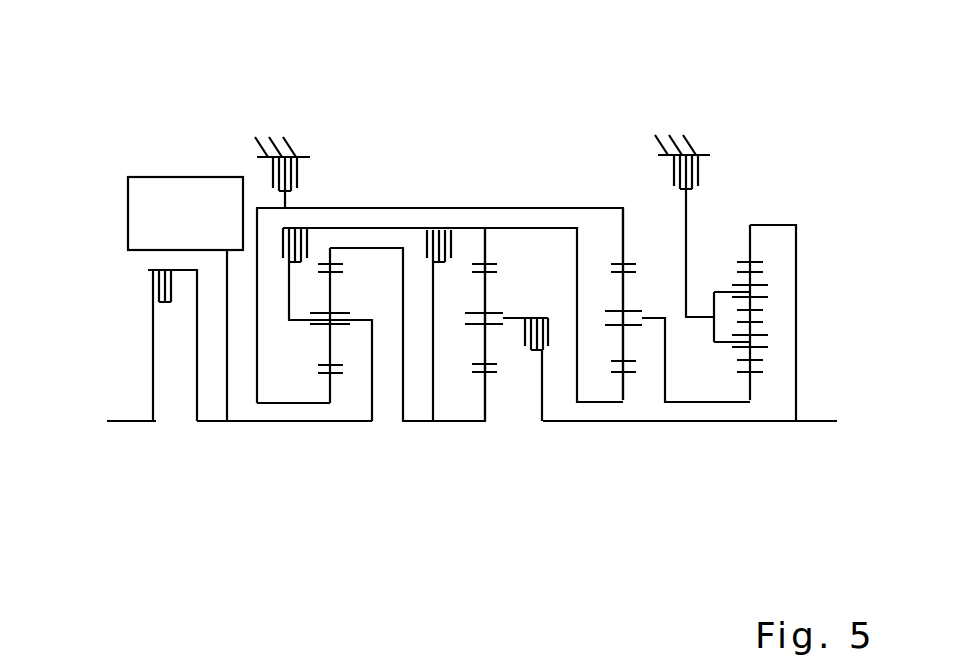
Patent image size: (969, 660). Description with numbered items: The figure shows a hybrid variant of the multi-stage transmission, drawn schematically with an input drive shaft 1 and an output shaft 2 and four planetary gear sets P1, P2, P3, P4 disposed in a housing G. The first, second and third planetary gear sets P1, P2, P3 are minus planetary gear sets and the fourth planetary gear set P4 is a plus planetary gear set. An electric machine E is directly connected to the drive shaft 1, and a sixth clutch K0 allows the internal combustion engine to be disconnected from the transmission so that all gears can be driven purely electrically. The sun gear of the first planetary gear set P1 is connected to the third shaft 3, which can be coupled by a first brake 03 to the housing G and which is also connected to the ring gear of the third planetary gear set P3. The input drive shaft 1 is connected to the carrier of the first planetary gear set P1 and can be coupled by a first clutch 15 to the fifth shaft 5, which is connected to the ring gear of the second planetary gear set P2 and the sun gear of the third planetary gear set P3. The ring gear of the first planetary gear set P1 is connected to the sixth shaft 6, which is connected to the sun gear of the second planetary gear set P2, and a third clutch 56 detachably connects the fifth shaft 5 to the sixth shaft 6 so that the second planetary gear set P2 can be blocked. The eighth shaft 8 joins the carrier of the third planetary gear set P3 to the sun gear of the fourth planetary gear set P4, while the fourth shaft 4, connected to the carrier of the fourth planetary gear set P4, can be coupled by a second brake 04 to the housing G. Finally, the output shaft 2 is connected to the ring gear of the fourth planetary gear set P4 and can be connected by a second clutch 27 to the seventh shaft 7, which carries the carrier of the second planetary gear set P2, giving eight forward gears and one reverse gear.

The electric machine E is at (183, 210).
The input drive shaft 1 is at (345, 421).
The sixth clutch K0 is at (153, 285).
The housing G is at (277, 147).
The first brake 03 is at (268, 175).
The third shaft 3 is at (622, 230).
The third clutch 56 is at (443, 230).
The first clutch 15 is at (290, 260).
The sixth shaft 6 is at (347, 247).
The fifth shaft 5 is at (485, 243).
The seventh shaft 7 is at (513, 318).
The second clutch 27 is at (540, 350).
The eighth shaft 8 is at (752, 382).
The second brake 04 is at (668, 128).
The fourth shaft 4 is at (687, 205).
The output shaft 2 is at (815, 421).
The first planetary gear set P1 is at (329, 190).
The second planetary gear set P2 is at (484, 190).
The third planetary gear set P3 is at (622, 190).
The fourth planetary gear set P4 is at (749, 190).